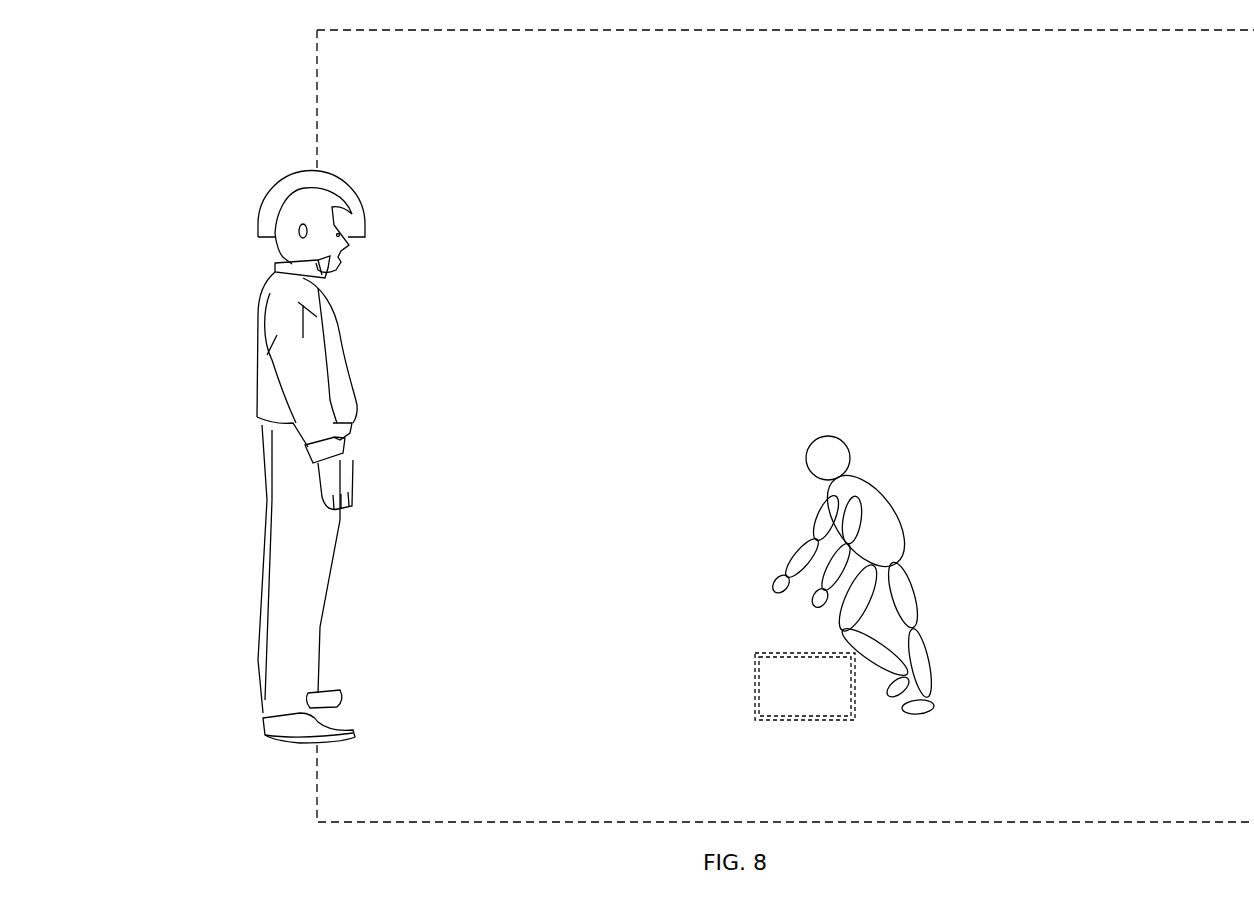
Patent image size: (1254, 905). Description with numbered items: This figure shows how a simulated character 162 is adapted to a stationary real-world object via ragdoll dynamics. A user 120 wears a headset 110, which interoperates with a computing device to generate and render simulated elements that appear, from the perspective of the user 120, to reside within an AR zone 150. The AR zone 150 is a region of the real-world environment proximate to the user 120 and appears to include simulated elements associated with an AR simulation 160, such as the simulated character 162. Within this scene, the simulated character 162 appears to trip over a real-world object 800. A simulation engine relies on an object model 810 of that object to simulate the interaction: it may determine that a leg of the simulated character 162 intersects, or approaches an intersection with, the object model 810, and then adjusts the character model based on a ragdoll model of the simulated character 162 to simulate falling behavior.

The headset 110 is at (282, 177).
The user 120 is at (257, 352).
The AR zone 150 is at (1205, 92).
The AR simulation 160 is at (508, 111).
The simulated character 162 is at (823, 433).
The real-world object 800 is at (789, 698).
The object model 810 is at (755, 690).